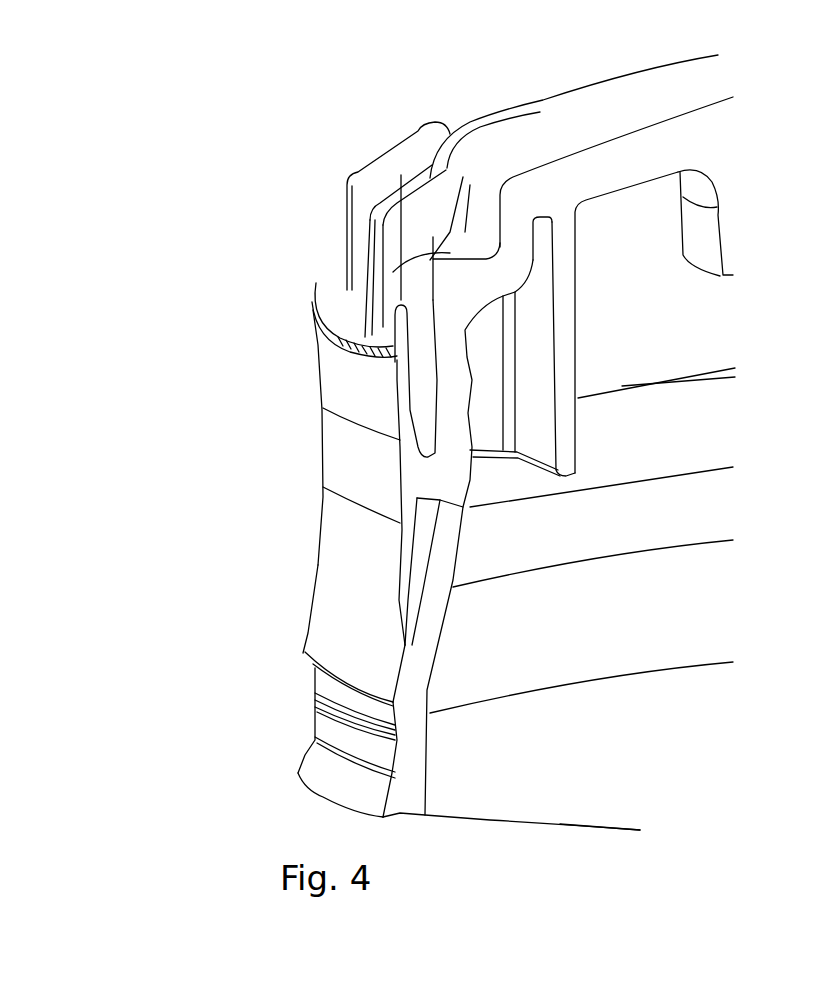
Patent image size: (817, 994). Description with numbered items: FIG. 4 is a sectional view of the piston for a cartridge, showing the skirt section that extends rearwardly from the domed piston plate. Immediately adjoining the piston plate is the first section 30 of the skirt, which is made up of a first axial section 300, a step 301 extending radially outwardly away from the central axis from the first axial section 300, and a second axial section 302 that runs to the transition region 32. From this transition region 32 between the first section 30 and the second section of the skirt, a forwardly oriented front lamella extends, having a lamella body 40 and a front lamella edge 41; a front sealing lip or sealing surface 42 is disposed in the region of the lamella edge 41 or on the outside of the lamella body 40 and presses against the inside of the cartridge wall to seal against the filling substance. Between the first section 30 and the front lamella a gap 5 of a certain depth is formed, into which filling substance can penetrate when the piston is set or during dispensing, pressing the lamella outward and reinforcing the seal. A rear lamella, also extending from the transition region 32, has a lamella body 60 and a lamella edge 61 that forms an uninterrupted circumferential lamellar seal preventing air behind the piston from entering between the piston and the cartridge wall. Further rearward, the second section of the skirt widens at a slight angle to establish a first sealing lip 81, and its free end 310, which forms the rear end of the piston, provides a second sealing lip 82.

The gap 5 is at (397, 360).
The first section 30 is at (253, 63).
The first axial section 300 is at (437, 192).
The step 301 is at (423, 258).
The second axial section 302 is at (415, 297).
The transition region 32 is at (420, 496).
The lamella body 40 is at (337, 393).
The front lamella edge 41 is at (318, 283).
The front sealing lip or sealing surface 42 is at (345, 340).
The lamella body 60 is at (345, 525).
The lamella edge 61 is at (322, 573).
The first sealing lip 81 is at (310, 657).
The second sealing lip 82 is at (300, 775).
The end 310 is at (640, 830).